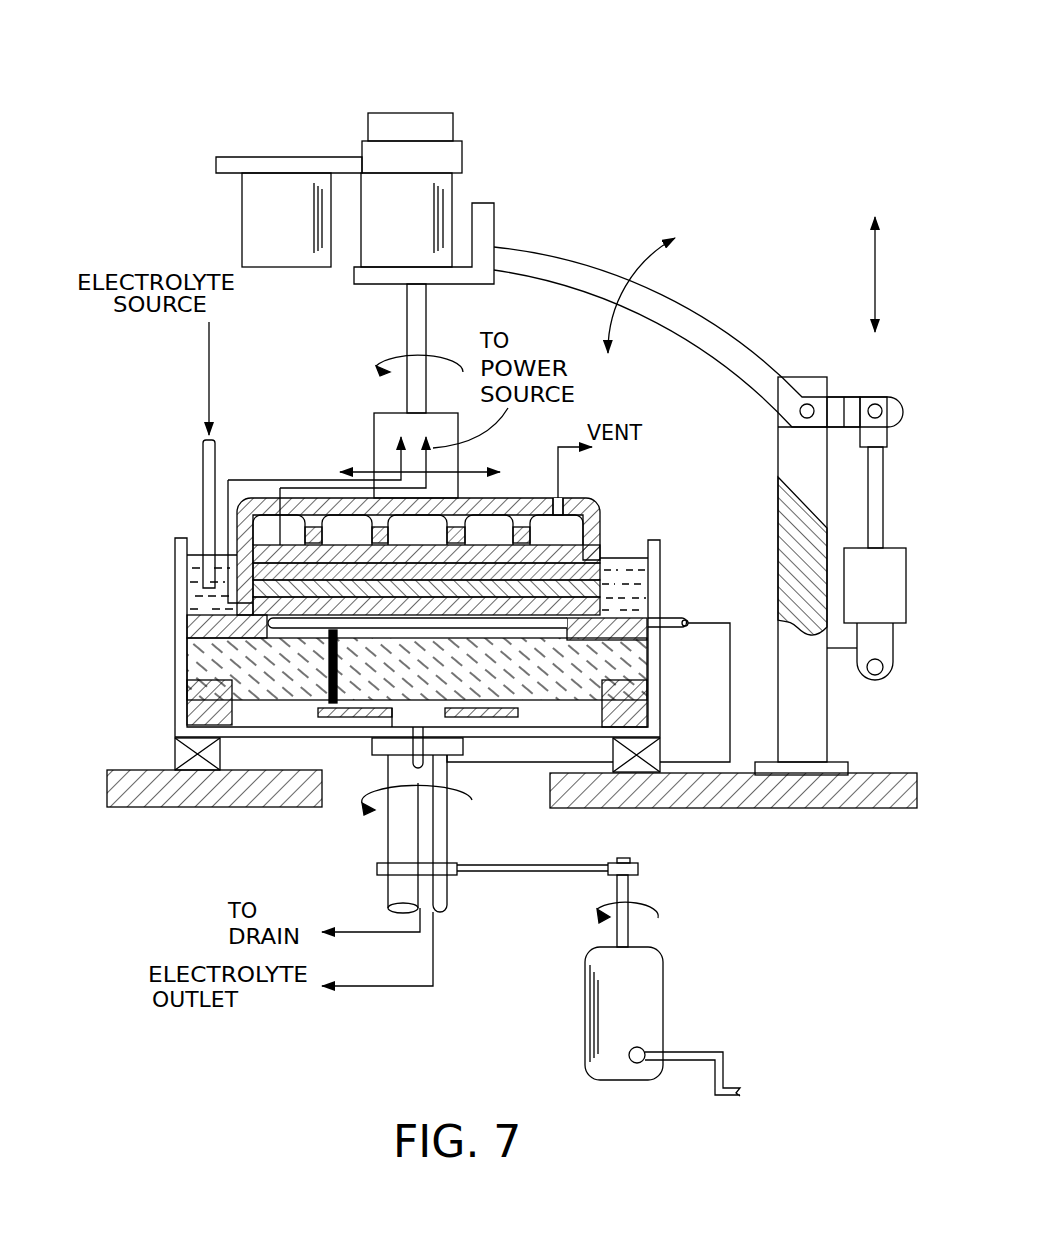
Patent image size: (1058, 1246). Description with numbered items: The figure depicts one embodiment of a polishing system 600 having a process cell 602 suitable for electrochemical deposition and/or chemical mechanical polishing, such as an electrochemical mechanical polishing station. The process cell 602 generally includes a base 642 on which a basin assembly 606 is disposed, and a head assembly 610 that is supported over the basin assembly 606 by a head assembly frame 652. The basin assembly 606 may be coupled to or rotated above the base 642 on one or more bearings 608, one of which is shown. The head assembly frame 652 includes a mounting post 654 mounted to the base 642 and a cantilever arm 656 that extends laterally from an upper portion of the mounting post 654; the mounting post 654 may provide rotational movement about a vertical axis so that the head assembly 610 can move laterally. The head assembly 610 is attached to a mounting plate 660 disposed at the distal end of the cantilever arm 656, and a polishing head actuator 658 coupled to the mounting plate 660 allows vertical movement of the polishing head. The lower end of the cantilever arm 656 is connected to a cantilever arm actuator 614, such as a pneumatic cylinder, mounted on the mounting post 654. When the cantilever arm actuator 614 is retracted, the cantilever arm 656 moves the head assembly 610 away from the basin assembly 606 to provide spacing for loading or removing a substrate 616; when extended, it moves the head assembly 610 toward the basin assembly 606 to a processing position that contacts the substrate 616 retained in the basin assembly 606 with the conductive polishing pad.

The polishing system 600 is at (760, 893).
The process cell 602 is at (399, 633).
The basin assembly 606 is at (178, 653).
The bearing 608 is at (657, 765).
The head assembly 610 is at (390, 144).
The cantilever arm actuator 614 is at (900, 546).
The substrate 616 is at (310, 624).
The base 642 is at (780, 808).
The head assembly frame 652 is at (555, 248).
The mounting post 654 is at (822, 700).
The cantilever arm 656 is at (700, 313).
The polishing head actuator 658 is at (372, 187).
The mounting plate 660 is at (483, 205).